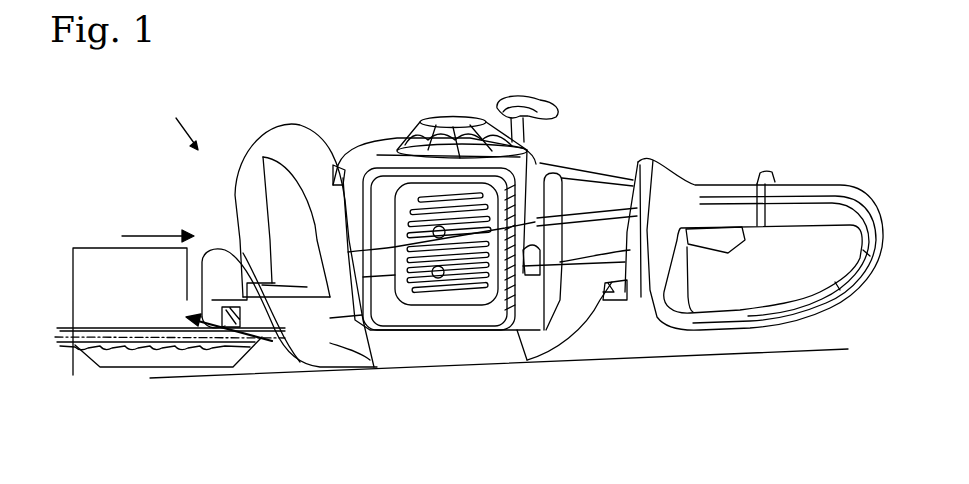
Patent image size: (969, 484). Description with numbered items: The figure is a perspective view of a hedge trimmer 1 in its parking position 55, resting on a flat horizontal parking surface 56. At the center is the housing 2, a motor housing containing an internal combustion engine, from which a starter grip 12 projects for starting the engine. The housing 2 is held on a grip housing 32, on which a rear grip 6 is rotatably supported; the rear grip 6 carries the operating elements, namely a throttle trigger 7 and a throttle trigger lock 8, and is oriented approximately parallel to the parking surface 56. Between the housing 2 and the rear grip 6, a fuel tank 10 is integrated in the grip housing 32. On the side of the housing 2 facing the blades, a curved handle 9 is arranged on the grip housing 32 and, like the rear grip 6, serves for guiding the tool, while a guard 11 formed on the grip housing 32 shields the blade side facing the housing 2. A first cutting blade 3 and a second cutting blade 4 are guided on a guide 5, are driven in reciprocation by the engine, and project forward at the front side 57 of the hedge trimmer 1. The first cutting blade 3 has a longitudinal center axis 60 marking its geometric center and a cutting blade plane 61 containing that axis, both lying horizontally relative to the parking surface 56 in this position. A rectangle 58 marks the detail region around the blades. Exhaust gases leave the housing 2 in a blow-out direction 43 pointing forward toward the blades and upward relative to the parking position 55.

The hedge trimmer 1 is at (636, 73).
The housing 2 is at (364, 152).
The first cutting blade 3 is at (107, 340).
The second cutting blade 4 is at (148, 350).
The guide 5 is at (164, 328).
The rear grip 6 is at (790, 205).
The throttle trigger 7 is at (724, 245).
The throttle trigger lock 8 is at (758, 176).
The curved handle 9 is at (288, 145).
The fuel tank 10 is at (589, 170).
The guard 11 is at (215, 262).
The starter grip 12 is at (541, 100).
The grip housing 32 is at (525, 346).
The blow-out direction 43 is at (222, 337).
The parking position 55 is at (175, 122).
The parking surface 56 is at (836, 348).
The front side 57 is at (158, 227).
The reference region 58 is at (97, 247).
The longitudinal center axis 60 is at (133, 335).
The cutting blade plane 61 is at (185, 376).